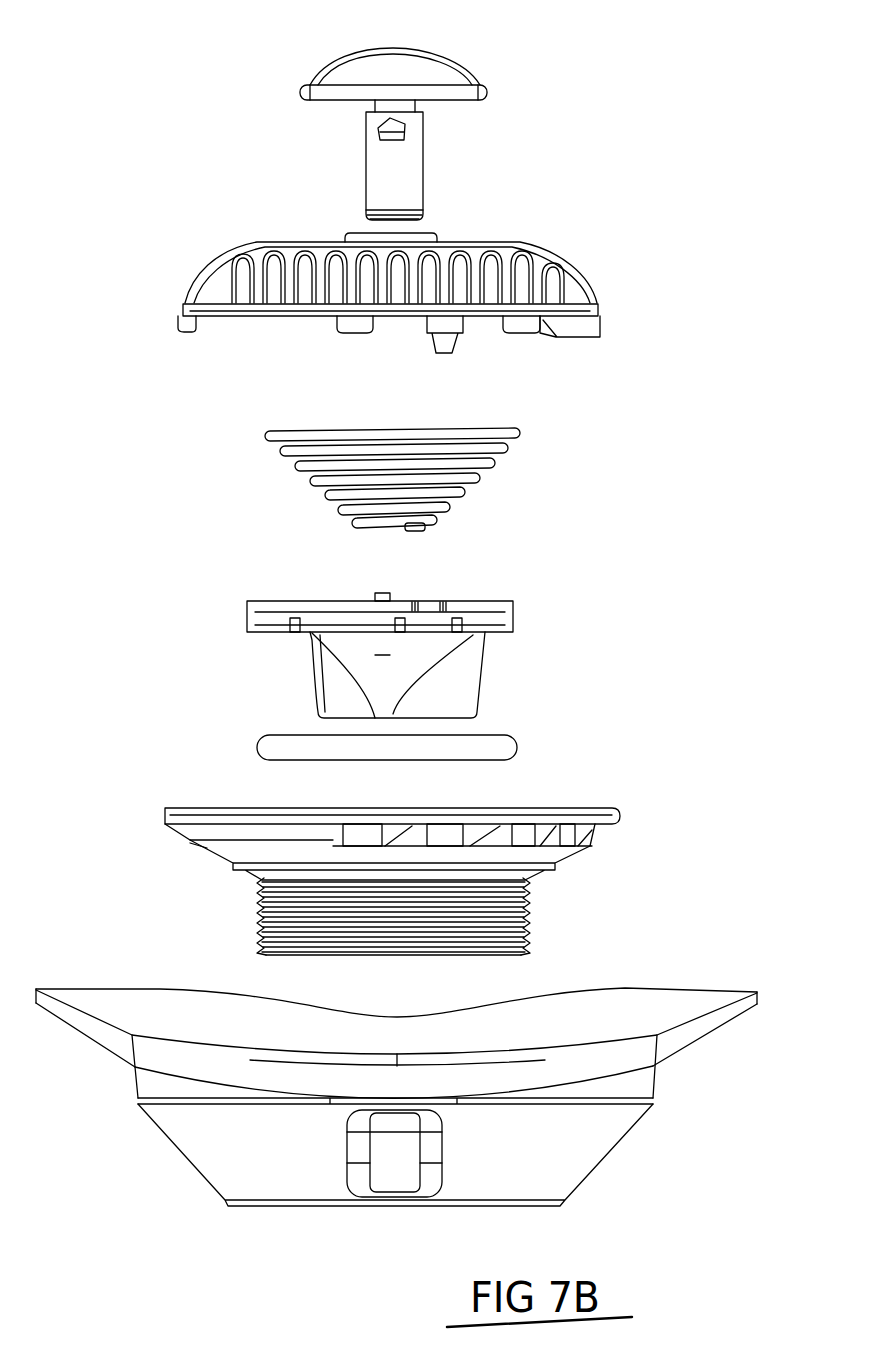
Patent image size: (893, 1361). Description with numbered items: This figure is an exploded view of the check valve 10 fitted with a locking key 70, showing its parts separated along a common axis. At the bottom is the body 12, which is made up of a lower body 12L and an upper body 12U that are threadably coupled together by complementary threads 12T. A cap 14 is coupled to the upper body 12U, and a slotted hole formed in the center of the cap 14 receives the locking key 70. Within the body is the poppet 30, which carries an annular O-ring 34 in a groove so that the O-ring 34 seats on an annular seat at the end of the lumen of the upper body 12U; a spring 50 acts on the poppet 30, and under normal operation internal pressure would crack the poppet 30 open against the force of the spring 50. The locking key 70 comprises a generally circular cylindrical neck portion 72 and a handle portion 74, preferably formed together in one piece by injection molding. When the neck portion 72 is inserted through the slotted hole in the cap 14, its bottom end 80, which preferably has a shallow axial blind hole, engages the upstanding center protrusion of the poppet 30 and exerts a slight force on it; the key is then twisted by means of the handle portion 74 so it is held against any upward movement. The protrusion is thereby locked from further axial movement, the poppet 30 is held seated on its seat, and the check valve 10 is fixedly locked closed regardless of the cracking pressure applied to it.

The check valve 10 is at (780, 296).
The body 12 is at (625, 820).
The upper body 12U is at (556, 866).
The threads 12T is at (533, 932).
The lower body 12L is at (628, 968).
The cap 14 is at (583, 273).
The poppet 30 is at (518, 624).
The O-ring 34 is at (520, 748).
The spring 50 is at (505, 449).
The locking key 70 is at (505, 2).
The neck portion 72 is at (394, 166).
The handle portion 74 is at (473, 70).
The bottom end 80 is at (427, 221).